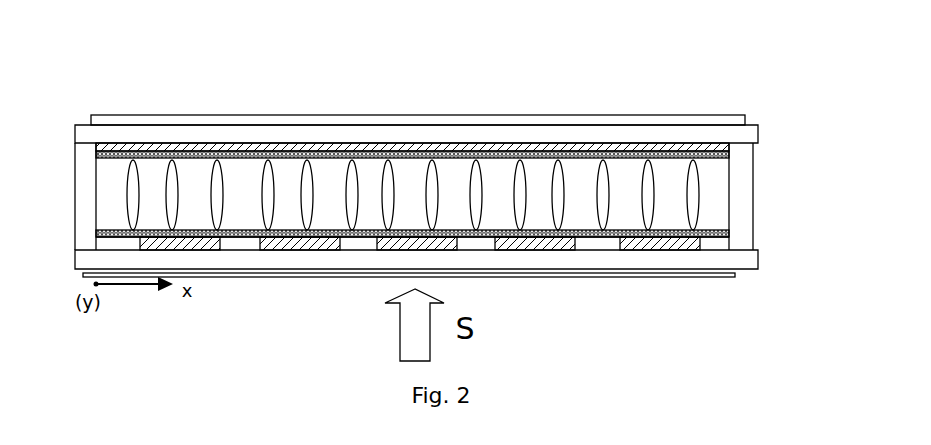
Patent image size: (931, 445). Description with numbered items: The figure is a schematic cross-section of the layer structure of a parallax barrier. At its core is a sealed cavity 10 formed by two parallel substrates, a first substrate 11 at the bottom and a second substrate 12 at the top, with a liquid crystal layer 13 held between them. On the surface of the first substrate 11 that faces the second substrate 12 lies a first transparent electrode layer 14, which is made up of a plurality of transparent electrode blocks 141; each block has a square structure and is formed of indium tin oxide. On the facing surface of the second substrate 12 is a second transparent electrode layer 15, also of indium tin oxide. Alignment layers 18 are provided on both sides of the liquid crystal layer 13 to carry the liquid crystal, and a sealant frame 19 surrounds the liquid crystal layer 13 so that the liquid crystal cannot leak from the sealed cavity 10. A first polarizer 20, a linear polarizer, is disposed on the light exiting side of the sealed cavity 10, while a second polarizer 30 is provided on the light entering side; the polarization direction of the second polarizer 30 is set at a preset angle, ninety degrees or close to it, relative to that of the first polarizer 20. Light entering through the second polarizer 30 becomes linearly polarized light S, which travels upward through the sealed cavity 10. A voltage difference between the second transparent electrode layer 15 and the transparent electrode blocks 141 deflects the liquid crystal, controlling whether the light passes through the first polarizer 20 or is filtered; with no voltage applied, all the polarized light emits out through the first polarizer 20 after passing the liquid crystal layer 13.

The sealed cavity 10 is at (440, 217).
The first substrate 11 is at (738, 258).
The second substrate 12 is at (738, 133).
The liquid crystal layer 13 is at (700, 197).
The first transparent electrode layer 14 is at (412, 292).
The transparent electrode block 141 is at (679, 244).
The second transparent electrode layer 15 is at (700, 148).
The alignment layers 18 is at (101, 155).
The sealant frame 19 is at (91, 194).
The first polarizer 20 is at (628, 116).
The second polarizer 30 is at (632, 277).